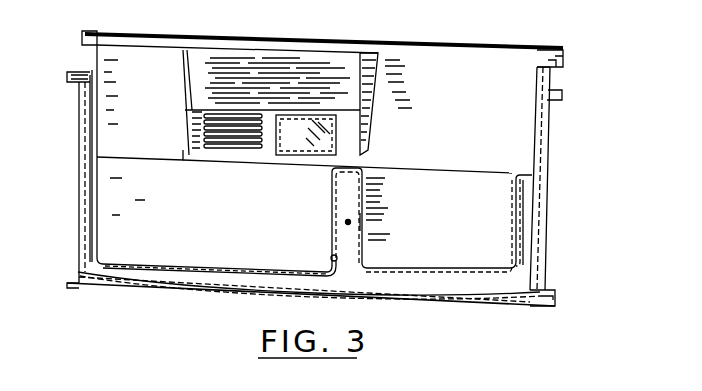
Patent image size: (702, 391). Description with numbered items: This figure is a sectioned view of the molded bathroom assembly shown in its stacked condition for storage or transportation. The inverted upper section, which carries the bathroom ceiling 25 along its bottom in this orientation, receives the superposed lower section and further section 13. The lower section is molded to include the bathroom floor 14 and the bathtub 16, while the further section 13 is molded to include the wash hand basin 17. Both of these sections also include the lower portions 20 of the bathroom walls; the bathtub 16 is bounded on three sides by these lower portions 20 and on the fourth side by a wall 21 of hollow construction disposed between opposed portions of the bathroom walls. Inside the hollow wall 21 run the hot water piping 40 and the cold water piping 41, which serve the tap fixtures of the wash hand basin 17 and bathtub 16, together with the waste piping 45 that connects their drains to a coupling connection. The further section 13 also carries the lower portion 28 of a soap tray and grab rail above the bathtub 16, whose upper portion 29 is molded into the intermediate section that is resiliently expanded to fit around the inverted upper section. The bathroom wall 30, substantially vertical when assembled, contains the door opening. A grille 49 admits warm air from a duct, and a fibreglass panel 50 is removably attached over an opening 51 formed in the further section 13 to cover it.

The further section 13 is at (457, 84).
The bathroom floor 14 is at (216, 268).
The bathtub 16 is at (447, 223).
The wash hand basin 17 is at (186, 84).
The lower portions of the bathroom walls 20 is at (131, 147).
The wall 21 is at (370, 192).
The bathroom ceiling 25 is at (483, 294).
The lower portion of soap tray and grab rail 28 is at (556, 63).
The upper portion of soap tray and grab rail 29 is at (546, 292).
The bathroom wall 30 is at (60, 182).
The hot water piping 40 is at (350, 222).
The cold water piping 41 is at (341, 237).
The waste piping 45 is at (330, 258).
The grille 49 is at (240, 148).
The fibreglass panel 50 is at (298, 142).
The opening 51 is at (314, 145).